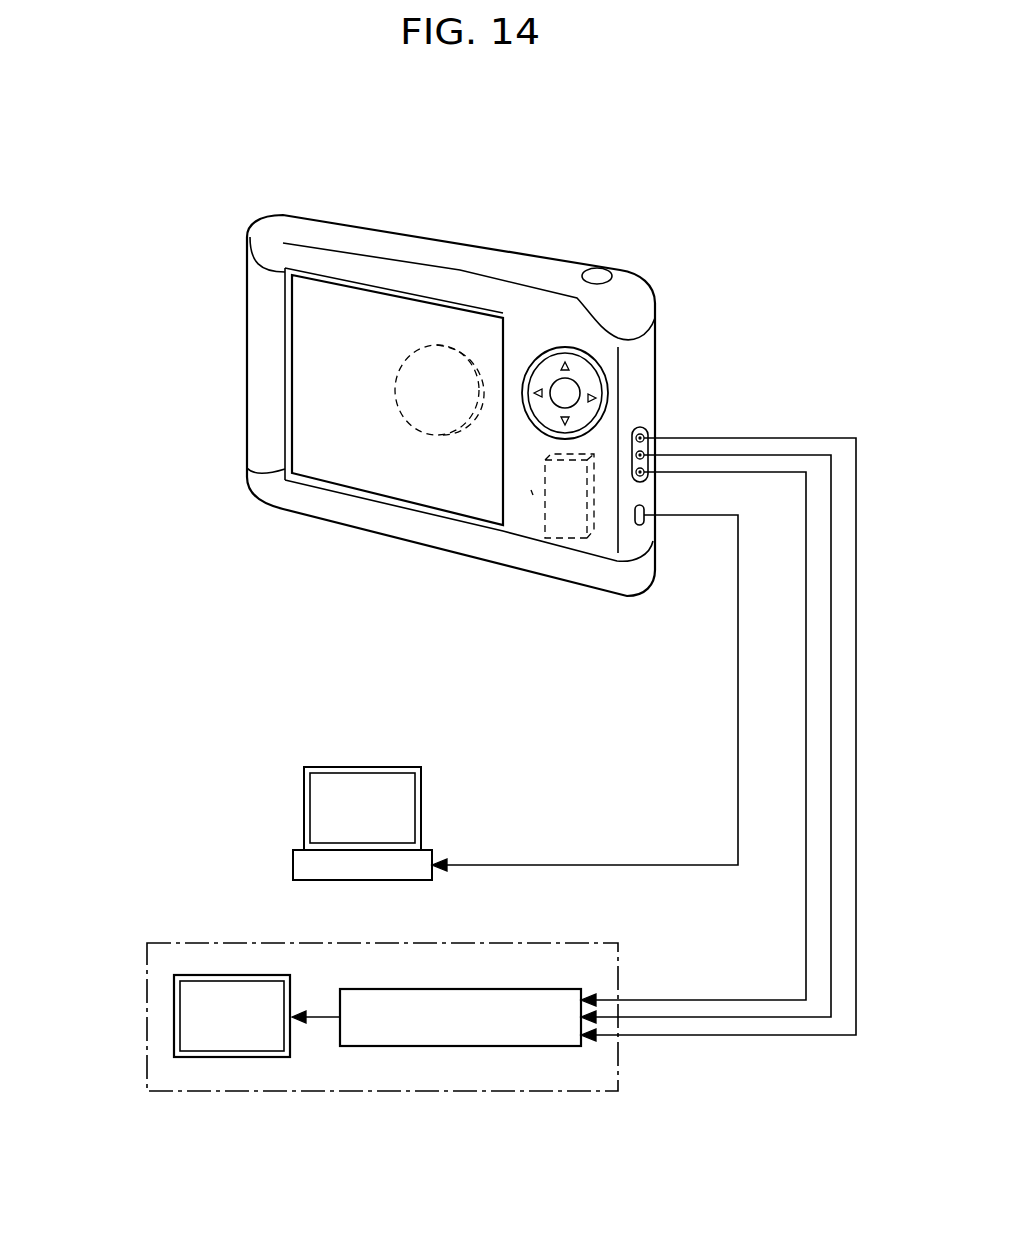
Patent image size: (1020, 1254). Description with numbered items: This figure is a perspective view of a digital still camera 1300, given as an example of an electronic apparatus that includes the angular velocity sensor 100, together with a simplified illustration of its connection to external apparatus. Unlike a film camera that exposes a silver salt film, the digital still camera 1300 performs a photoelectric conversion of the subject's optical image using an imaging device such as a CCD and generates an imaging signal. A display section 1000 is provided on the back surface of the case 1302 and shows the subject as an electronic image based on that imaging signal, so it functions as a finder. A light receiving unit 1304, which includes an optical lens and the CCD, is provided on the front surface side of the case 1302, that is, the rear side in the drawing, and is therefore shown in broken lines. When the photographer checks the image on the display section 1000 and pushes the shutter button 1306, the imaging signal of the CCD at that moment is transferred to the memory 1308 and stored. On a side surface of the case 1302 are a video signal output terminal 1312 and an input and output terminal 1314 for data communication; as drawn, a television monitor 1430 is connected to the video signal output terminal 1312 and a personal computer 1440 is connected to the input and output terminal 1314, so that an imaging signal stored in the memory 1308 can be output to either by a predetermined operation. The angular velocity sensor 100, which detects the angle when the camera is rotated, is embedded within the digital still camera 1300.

The digital still camera 1300 is at (619, 132).
The case 1302 is at (263, 256).
The light receiving unit 1304 is at (440, 346).
The shutter button 1306 is at (600, 269).
The memory 1308 is at (568, 518).
The video signal output terminal 1312 is at (647, 430).
The input and output terminal for data communication 1314 is at (645, 518).
The display section 1000 is at (372, 468).
The angular velocity sensor 100 is at (531, 490).
The television monitor 1430 is at (147, 1013).
The personal computer 1440 is at (303, 808).